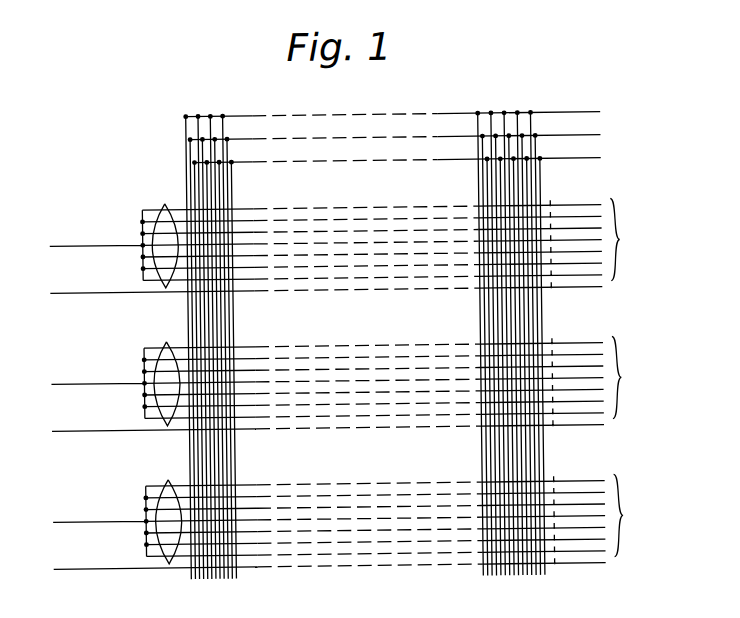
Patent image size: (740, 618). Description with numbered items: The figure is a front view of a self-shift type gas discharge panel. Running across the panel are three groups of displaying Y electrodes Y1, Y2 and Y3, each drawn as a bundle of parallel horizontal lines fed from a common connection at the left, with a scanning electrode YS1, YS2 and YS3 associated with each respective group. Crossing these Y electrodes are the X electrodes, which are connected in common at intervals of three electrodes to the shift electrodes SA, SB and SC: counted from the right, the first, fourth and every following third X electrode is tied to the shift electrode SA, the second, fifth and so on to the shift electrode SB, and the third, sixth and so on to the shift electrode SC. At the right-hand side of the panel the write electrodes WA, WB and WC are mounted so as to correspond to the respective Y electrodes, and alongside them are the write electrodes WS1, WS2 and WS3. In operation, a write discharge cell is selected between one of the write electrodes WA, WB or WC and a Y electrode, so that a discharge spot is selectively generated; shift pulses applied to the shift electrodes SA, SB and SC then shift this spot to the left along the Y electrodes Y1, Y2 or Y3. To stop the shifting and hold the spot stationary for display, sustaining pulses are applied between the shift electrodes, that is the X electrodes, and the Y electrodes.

The shift electrode SC is at (413, 339).
The shift electrode SB is at (415, 351).
The shift electrode SA is at (417, 362).
The displaying Y electrode group Y1 is at (164, 204).
The displaying Y electrode group Y2 is at (164, 342).
The displaying Y electrode group Y3 is at (164, 480).
The scanning electrode YS1 is at (263, 280).
The scanning electrode YS2 is at (265, 418).
The scanning electrode YS3 is at (266, 556).
The write electrode WA is at (457, 241).
The write electrode WB is at (460, 379).
The write electrode WC is at (462, 517).
The write electrode WS1 is at (575, 293).
The write electrode WS2 is at (577, 431).
The write electrode WS3 is at (579, 569).